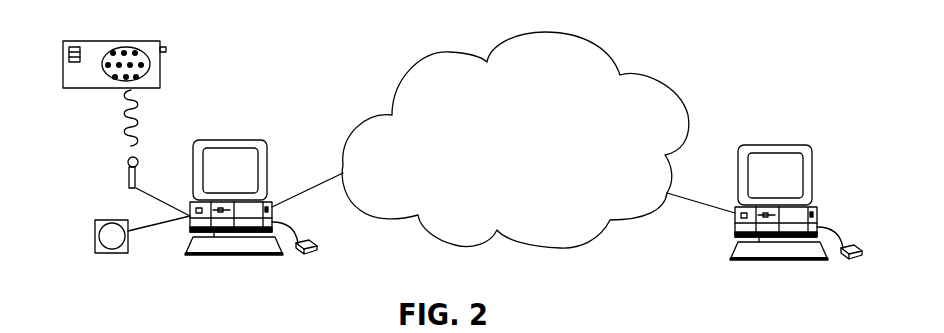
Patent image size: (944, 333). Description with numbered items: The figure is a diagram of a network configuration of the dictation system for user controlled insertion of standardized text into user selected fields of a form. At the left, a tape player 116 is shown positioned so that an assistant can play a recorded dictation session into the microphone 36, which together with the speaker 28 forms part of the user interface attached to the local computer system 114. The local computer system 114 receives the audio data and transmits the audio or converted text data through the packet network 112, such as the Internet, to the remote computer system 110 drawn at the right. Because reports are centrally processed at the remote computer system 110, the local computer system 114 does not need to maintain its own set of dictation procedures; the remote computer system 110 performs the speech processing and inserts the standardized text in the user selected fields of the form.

The tape player 116 is at (161, 42).
The microphone 36 is at (138, 163).
The speaker 28 is at (95, 225).
The local computer system 114 is at (272, 130).
The packet network 112 is at (585, 35).
The remote computer system 110 is at (808, 142).